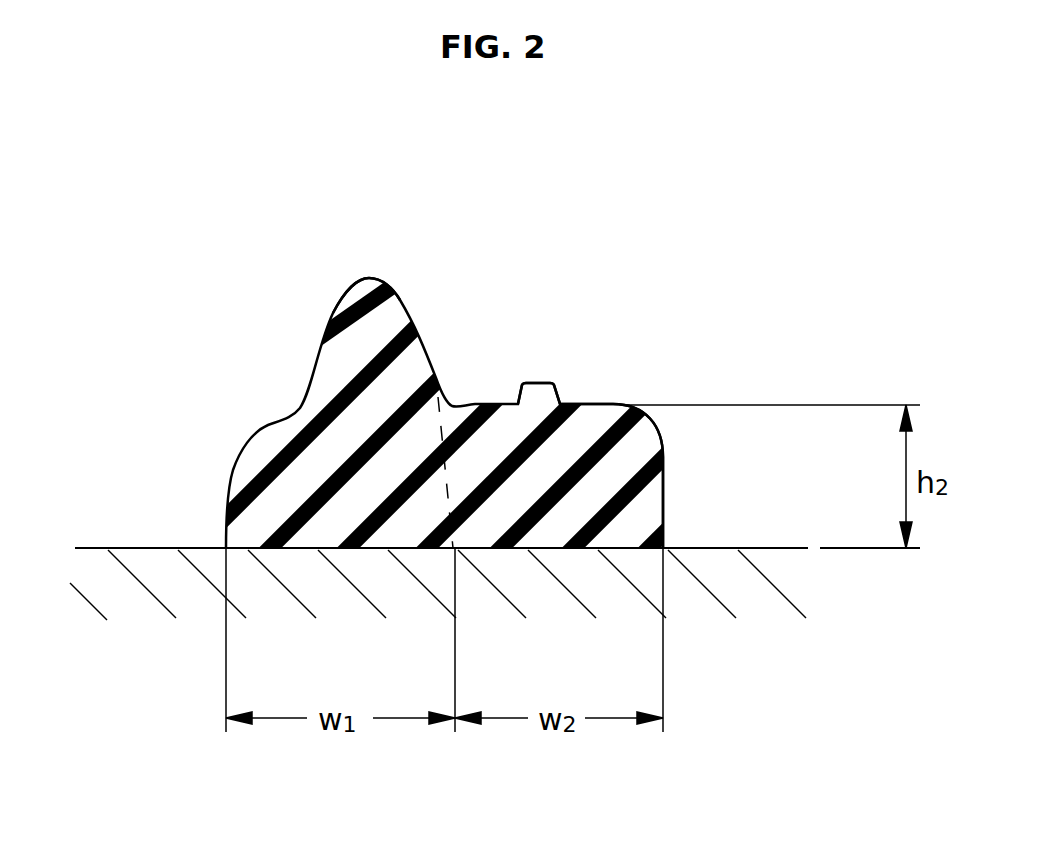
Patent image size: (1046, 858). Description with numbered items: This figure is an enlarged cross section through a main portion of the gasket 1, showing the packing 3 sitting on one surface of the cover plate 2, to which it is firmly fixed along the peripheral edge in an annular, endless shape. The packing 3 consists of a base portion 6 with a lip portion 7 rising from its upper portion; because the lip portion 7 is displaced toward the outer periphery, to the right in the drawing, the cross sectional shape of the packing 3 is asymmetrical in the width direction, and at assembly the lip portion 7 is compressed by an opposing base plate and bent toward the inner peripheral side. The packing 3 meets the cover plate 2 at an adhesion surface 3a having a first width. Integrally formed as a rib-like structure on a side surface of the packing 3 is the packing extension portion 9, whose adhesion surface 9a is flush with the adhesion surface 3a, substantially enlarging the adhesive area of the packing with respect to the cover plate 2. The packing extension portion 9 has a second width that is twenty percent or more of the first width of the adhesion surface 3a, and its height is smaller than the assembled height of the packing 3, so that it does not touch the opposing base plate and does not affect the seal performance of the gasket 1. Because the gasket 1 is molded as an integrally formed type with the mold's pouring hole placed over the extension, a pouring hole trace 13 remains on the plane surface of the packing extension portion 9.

The gasket 1 is at (275, 312).
The cover plate 2 is at (153, 567).
The packing 3 is at (413, 438).
The adhesion surface 3a is at (298, 550).
The base portion 6 is at (297, 490).
The lip portion 7 is at (368, 283).
The packing extension portion 9 is at (585, 428).
The adhesion surface 9a is at (598, 550).
The pouring hole trace 13 is at (538, 392).